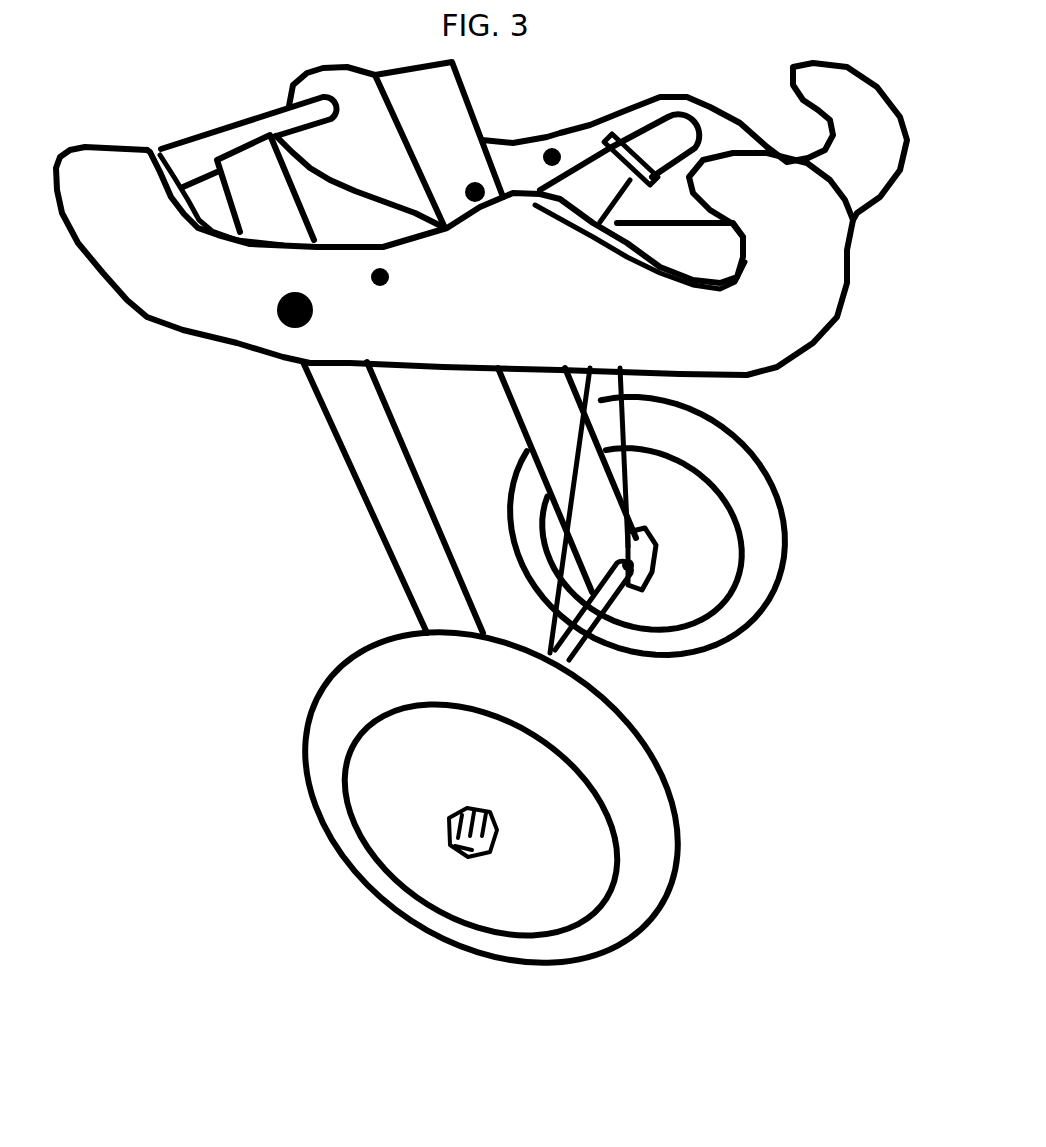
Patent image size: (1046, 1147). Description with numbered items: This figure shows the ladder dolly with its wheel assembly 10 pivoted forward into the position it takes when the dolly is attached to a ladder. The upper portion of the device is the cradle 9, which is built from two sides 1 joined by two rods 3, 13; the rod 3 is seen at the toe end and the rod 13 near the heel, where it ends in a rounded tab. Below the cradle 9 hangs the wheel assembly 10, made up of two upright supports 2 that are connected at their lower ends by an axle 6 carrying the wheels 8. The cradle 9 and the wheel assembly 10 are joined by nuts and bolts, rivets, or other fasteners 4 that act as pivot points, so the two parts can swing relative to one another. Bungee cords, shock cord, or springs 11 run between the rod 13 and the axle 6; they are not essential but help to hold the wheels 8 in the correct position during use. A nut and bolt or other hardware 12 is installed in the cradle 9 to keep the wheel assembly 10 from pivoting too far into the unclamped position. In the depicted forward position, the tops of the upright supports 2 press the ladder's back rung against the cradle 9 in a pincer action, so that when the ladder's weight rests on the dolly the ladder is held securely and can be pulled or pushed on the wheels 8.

The side 1 is at (817, 323).
The upright support 2 is at (383, 497).
The rod 3 is at (317, 118).
The fastener 4 is at (310, 298).
The axle 6 is at (575, 652).
The wheel 8 is at (660, 840).
The cradle 9 is at (143, 360).
The wheel assembly 10 is at (350, 600).
The spring 11 is at (629, 180).
The hardware 12 is at (388, 275).
The rod 13 is at (663, 133).